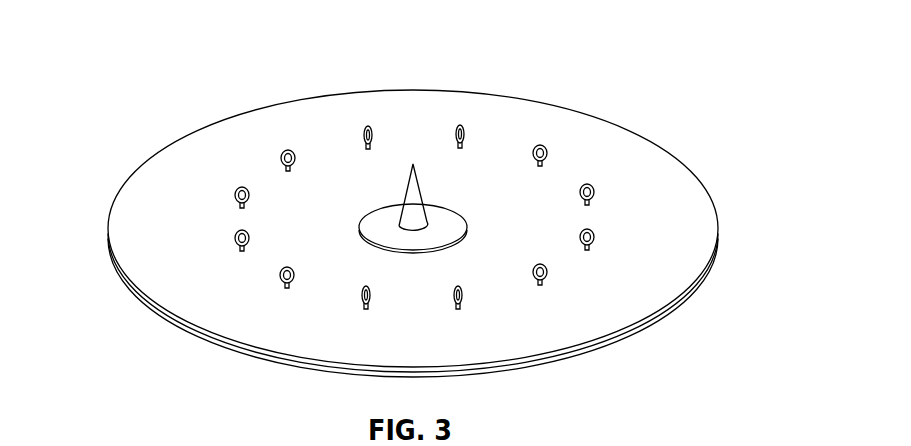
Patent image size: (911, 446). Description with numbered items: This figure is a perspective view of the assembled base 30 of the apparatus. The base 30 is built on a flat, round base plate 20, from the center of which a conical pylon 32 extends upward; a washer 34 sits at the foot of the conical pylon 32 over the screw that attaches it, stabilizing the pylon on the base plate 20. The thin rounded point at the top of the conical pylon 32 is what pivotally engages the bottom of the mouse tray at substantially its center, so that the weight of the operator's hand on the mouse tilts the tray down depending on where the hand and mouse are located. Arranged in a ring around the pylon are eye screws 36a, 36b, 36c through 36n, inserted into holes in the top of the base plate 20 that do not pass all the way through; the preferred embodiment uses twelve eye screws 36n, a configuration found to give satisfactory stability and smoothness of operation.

The base 30 is at (401, 86).
The base plate 20 is at (413, 233).
The conical pylon 32 is at (414, 207).
The washer 34 is at (386, 229).
The eye screw 36a is at (464, 128).
The eye screw 36b is at (549, 146).
The eye screw 36c is at (597, 185).
The eye screws 36n is at (597, 232).